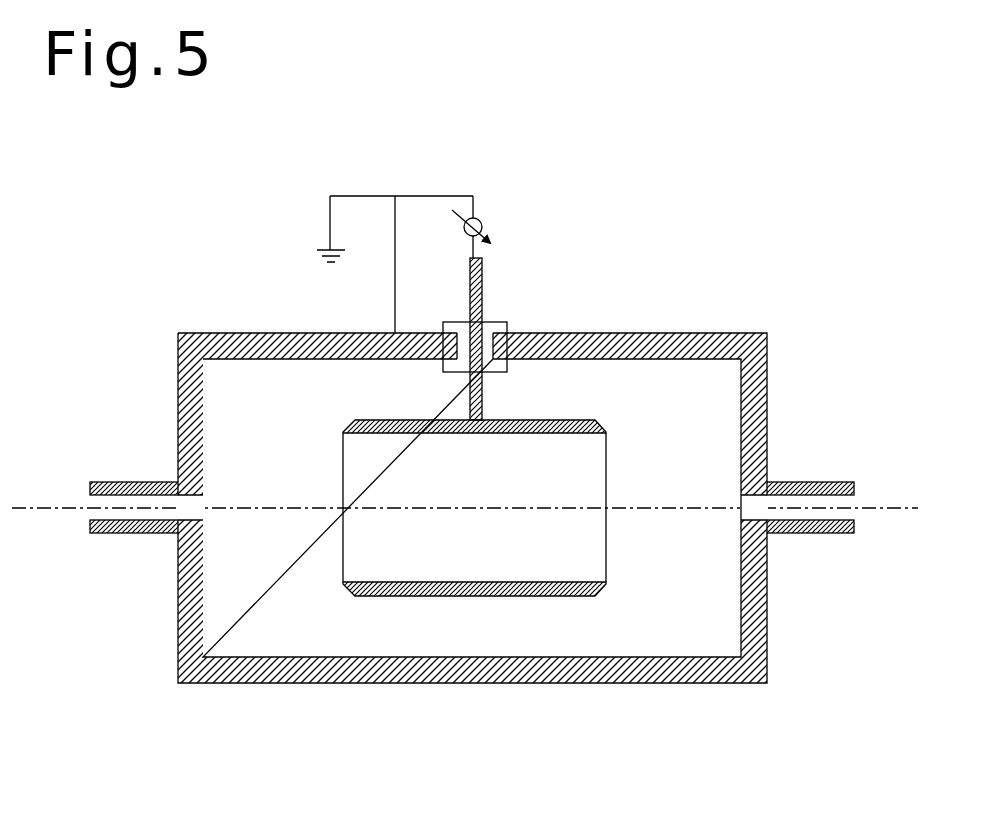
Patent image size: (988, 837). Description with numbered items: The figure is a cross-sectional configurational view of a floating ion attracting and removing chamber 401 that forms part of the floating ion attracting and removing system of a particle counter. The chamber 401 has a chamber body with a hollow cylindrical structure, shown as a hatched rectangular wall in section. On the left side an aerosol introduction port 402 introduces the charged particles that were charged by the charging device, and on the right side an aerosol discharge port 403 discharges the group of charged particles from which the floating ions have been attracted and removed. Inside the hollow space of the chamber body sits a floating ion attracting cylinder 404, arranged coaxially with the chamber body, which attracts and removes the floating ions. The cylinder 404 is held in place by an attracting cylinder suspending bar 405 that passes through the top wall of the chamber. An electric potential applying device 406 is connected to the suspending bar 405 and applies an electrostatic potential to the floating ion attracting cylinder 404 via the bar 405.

The floating ion attracting and removing chamber 401 is at (472, 537).
The aerosol introduction port 402 is at (117, 482).
The aerosol discharge port 403 is at (817, 483).
The floating ion attracting cylinder 404 is at (474, 530).
The attracting cylinder suspending bar 405 is at (500, 339).
The electric potential applying device 406 is at (442, 264).